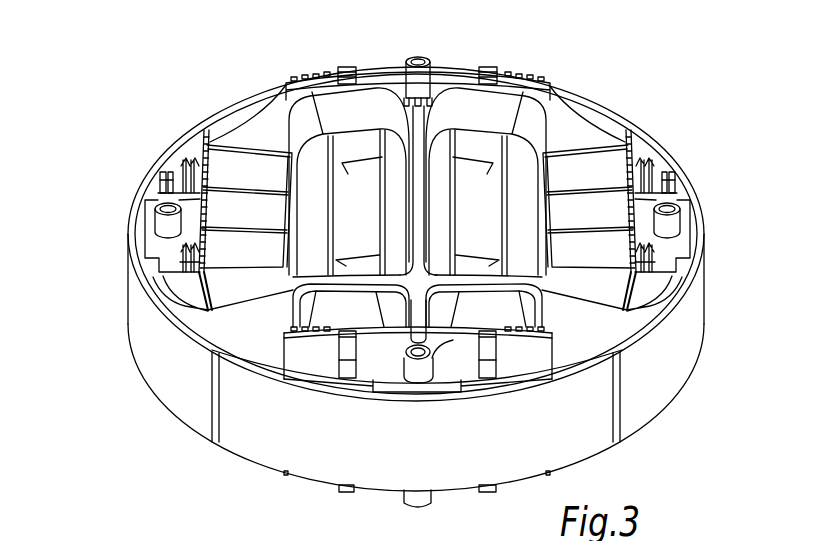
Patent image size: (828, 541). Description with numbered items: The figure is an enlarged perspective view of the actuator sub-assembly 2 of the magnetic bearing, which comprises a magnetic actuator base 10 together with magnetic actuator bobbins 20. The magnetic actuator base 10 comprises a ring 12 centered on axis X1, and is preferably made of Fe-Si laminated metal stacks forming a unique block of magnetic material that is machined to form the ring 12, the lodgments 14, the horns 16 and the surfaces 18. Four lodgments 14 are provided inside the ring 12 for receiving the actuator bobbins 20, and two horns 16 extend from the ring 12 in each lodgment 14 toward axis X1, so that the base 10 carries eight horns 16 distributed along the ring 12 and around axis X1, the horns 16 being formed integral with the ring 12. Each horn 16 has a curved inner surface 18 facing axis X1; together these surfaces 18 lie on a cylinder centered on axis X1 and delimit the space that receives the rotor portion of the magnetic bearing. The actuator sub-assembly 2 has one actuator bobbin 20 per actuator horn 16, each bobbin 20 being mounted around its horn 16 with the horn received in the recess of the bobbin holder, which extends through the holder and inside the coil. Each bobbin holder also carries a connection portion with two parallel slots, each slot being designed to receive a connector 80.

The actuator sub-assembly 2 is at (112, 104).
The magnetic actuator base 10 is at (683, 132).
The ring 12 is at (685, 317).
The lodgment 14 is at (509, 388).
The actuator horn 16 is at (468, 195).
The curved inner surface 18 is at (509, 82).
The magnetic actuator bobbin 20 is at (247, 162).
The connector 80 is at (168, 152).
The axis X1 is at (419, 62).